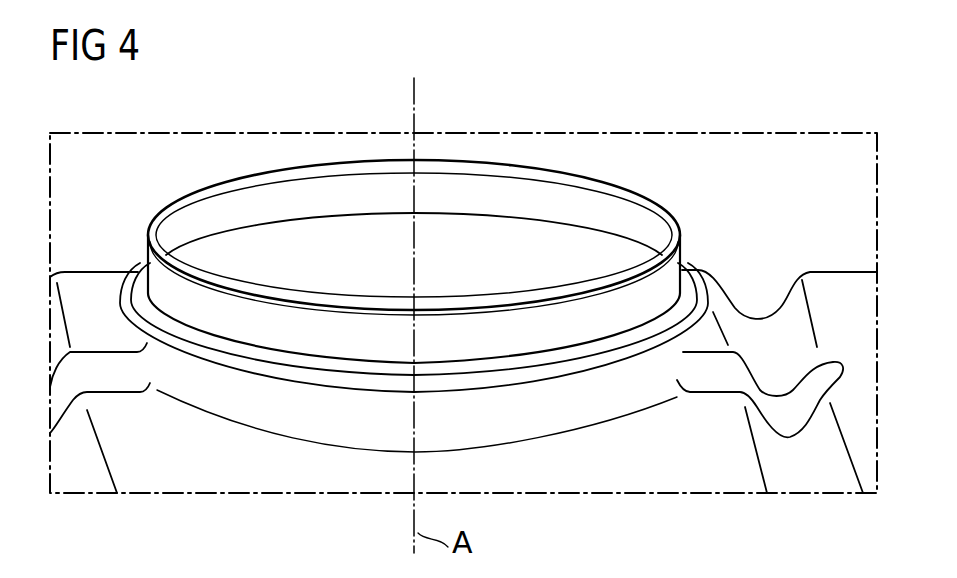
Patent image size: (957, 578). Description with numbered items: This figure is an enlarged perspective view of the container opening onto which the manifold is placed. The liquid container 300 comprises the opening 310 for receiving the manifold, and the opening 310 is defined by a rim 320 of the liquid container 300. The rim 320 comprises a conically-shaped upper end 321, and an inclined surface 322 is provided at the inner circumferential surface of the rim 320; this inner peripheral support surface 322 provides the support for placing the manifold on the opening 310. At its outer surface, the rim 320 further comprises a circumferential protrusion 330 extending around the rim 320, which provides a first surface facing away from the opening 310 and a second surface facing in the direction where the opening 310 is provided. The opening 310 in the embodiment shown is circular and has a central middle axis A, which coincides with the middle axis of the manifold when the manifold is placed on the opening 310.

The liquid container 300 is at (827, 280).
The opening 310 is at (357, 275).
The rim 320 is at (373, 422).
The conically-shaped upper end 321 is at (667, 211).
The inclined surface 322 is at (592, 188).
The circumferential protrusion 330 is at (142, 293).